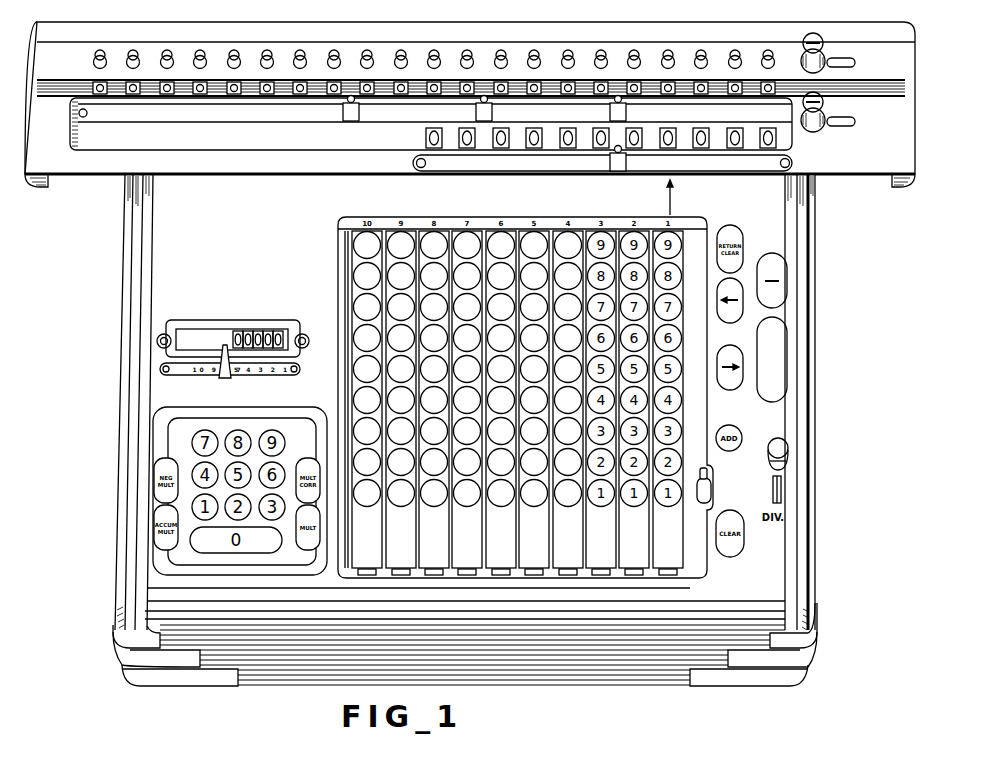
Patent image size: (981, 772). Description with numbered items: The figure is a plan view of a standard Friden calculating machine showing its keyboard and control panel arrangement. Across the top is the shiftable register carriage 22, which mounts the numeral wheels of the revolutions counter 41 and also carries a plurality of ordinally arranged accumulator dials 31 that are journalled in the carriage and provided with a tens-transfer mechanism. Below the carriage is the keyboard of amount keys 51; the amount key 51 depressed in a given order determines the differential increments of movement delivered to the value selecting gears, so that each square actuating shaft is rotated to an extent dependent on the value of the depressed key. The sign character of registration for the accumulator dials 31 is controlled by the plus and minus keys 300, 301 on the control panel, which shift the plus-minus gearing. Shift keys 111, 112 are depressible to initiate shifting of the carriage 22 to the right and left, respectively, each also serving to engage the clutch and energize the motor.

The register carriage 22 is at (493, 104).
The accumulator dials 31 is at (480, 82).
The revolutions counter 41 is at (425, 137).
The amount key 51 is at (601, 507).
The shift key 111 is at (735, 388).
The shift key 112 is at (736, 318).
The plus key 300 is at (776, 362).
The minus key 301 is at (777, 295).